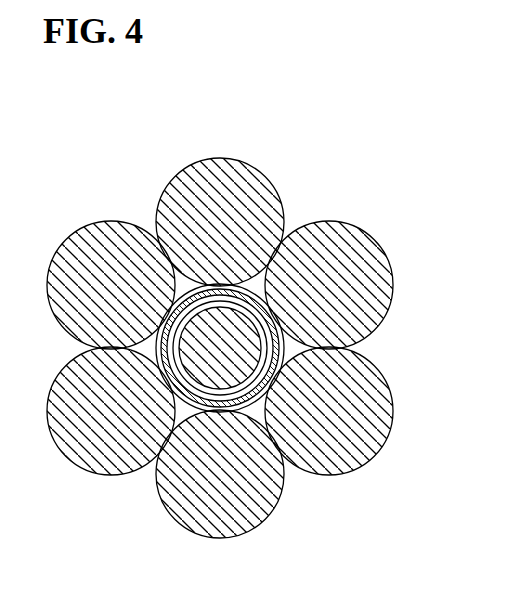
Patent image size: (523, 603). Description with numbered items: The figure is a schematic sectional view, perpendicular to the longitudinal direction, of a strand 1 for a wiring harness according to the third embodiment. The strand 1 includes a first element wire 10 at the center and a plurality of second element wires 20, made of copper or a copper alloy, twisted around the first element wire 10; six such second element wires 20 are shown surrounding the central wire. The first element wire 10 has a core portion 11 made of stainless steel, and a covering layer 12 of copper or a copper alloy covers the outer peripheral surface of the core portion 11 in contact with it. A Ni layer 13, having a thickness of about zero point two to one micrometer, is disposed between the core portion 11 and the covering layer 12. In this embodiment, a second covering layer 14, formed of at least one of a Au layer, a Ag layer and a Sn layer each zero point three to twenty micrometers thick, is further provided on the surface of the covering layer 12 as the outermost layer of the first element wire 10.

The strand 1 is at (338, 193).
The first element wire 10 is at (308, 348).
The core portion 11 is at (226, 360).
The covering layer 12 is at (240, 297).
The Ni layer 13 is at (270, 340).
The second covering layer 14 is at (248, 291).
The second element wire 20 is at (216, 187).